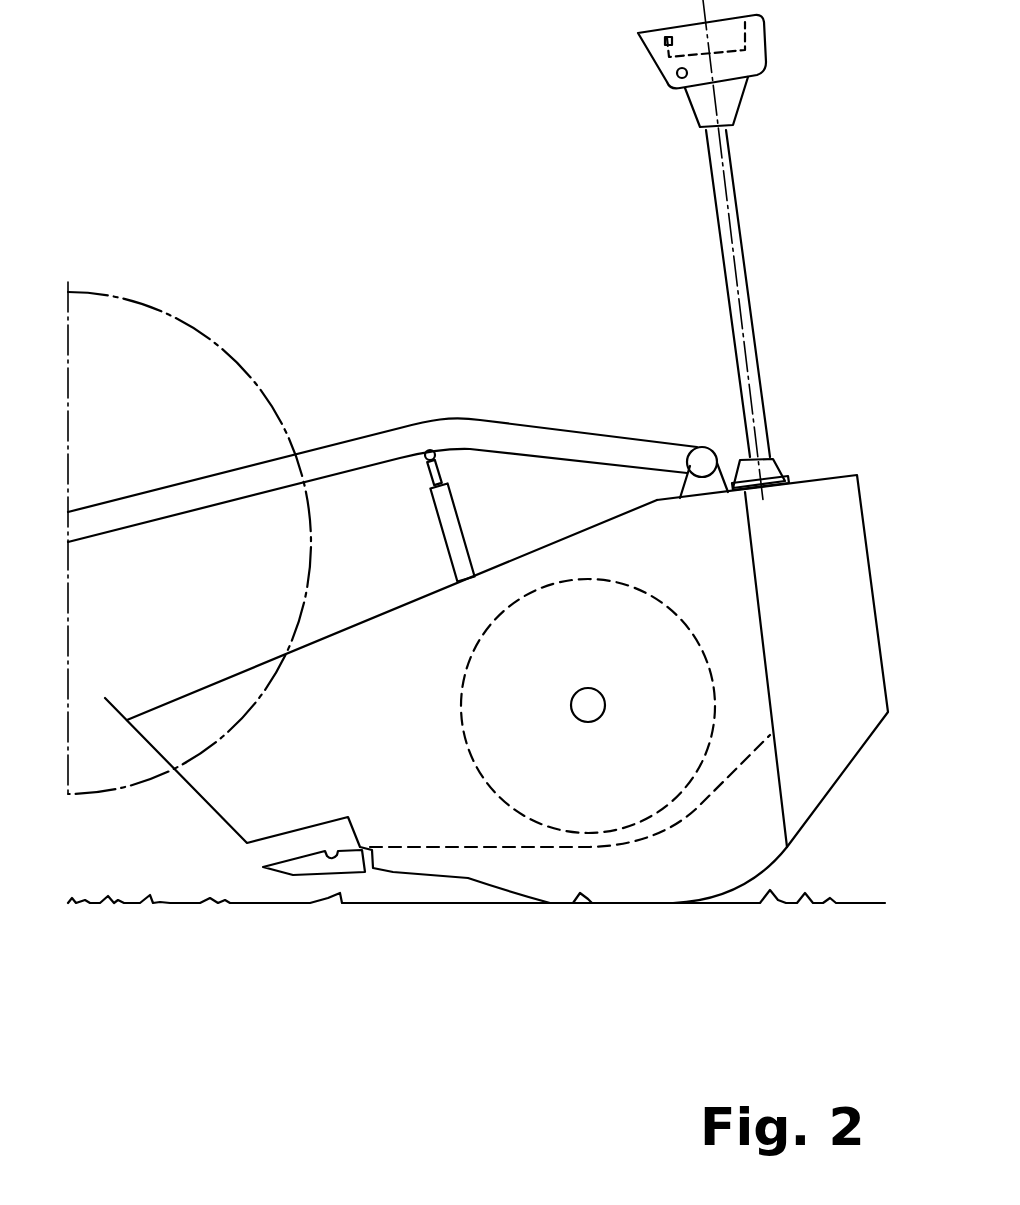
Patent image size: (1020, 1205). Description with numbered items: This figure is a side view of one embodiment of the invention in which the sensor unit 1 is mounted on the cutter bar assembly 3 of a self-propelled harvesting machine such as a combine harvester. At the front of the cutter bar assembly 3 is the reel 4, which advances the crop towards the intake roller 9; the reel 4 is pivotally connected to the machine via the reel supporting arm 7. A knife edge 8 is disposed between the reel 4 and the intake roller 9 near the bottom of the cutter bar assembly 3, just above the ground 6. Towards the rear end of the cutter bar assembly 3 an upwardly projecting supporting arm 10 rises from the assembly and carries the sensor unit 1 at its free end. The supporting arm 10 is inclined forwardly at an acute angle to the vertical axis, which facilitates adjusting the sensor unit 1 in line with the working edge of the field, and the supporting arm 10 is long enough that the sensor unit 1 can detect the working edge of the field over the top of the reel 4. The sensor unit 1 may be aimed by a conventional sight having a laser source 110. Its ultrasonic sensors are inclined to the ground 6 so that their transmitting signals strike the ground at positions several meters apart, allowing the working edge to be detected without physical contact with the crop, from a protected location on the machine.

The sensor unit 1 is at (763, 48).
The laser source 110 is at (667, 46).
The supporting arm 10 is at (750, 298).
The reel 4 is at (218, 353).
The reel supporting arm 7 is at (353, 435).
The cutter bar assembly 3 is at (665, 875).
The intake roller 9 is at (548, 828).
The knife edge 8 is at (307, 868).
The ground 6 is at (423, 905).